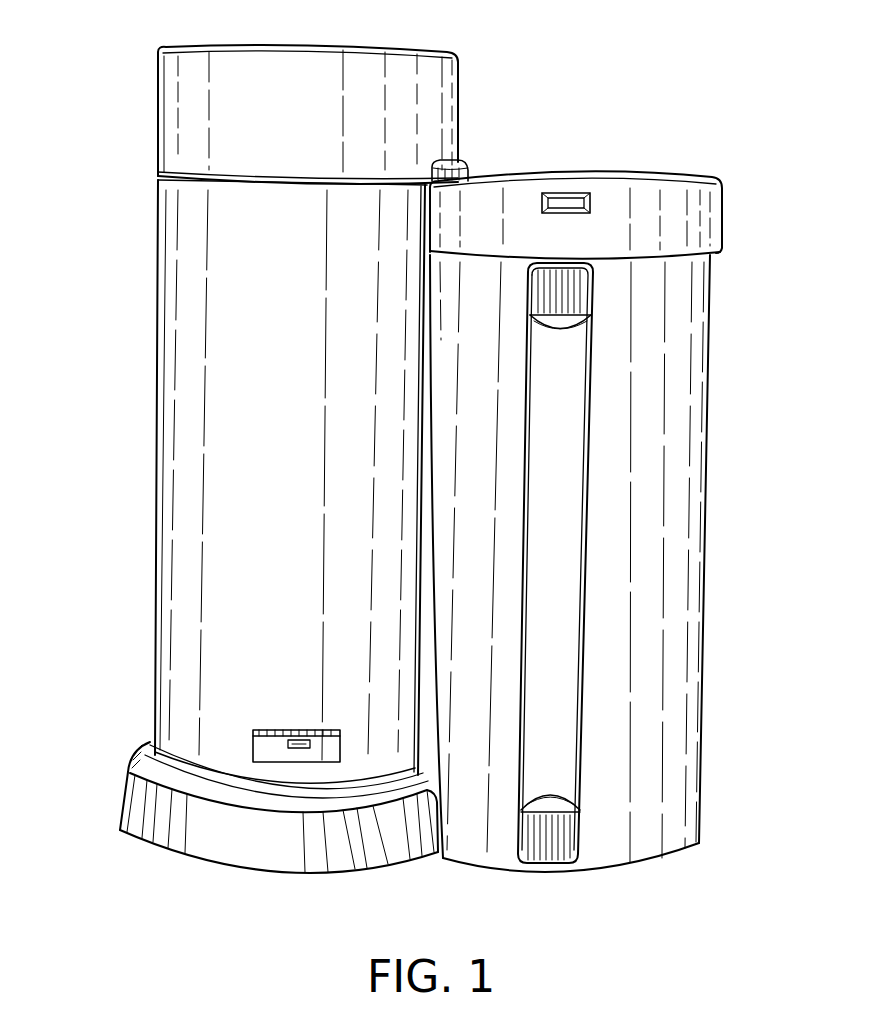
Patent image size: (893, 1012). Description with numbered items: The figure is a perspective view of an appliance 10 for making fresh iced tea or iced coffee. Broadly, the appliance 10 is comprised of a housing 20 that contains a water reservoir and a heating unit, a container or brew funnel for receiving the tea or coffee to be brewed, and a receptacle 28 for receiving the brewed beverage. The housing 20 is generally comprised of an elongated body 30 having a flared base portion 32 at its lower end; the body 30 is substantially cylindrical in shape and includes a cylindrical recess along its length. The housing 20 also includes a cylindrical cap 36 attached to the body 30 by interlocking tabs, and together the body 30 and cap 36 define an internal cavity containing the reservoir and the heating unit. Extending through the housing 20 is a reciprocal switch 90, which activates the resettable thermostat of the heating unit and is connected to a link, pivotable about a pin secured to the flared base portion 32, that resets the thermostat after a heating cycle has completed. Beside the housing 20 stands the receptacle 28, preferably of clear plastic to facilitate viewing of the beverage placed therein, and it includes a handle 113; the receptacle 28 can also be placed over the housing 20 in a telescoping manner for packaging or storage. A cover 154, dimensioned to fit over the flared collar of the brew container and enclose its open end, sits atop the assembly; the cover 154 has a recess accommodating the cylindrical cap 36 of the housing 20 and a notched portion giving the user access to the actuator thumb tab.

The appliance 10 is at (570, 45).
The housing 20 is at (142, 358).
The receptacle 28 is at (726, 378).
The body 30 is at (152, 470).
The flared base portion 32 is at (152, 827).
The cylindrical cap 36 is at (233, 103).
The reciprocal switch 90 is at (283, 740).
The handle 113 is at (557, 743).
The cover 154 is at (576, 182).